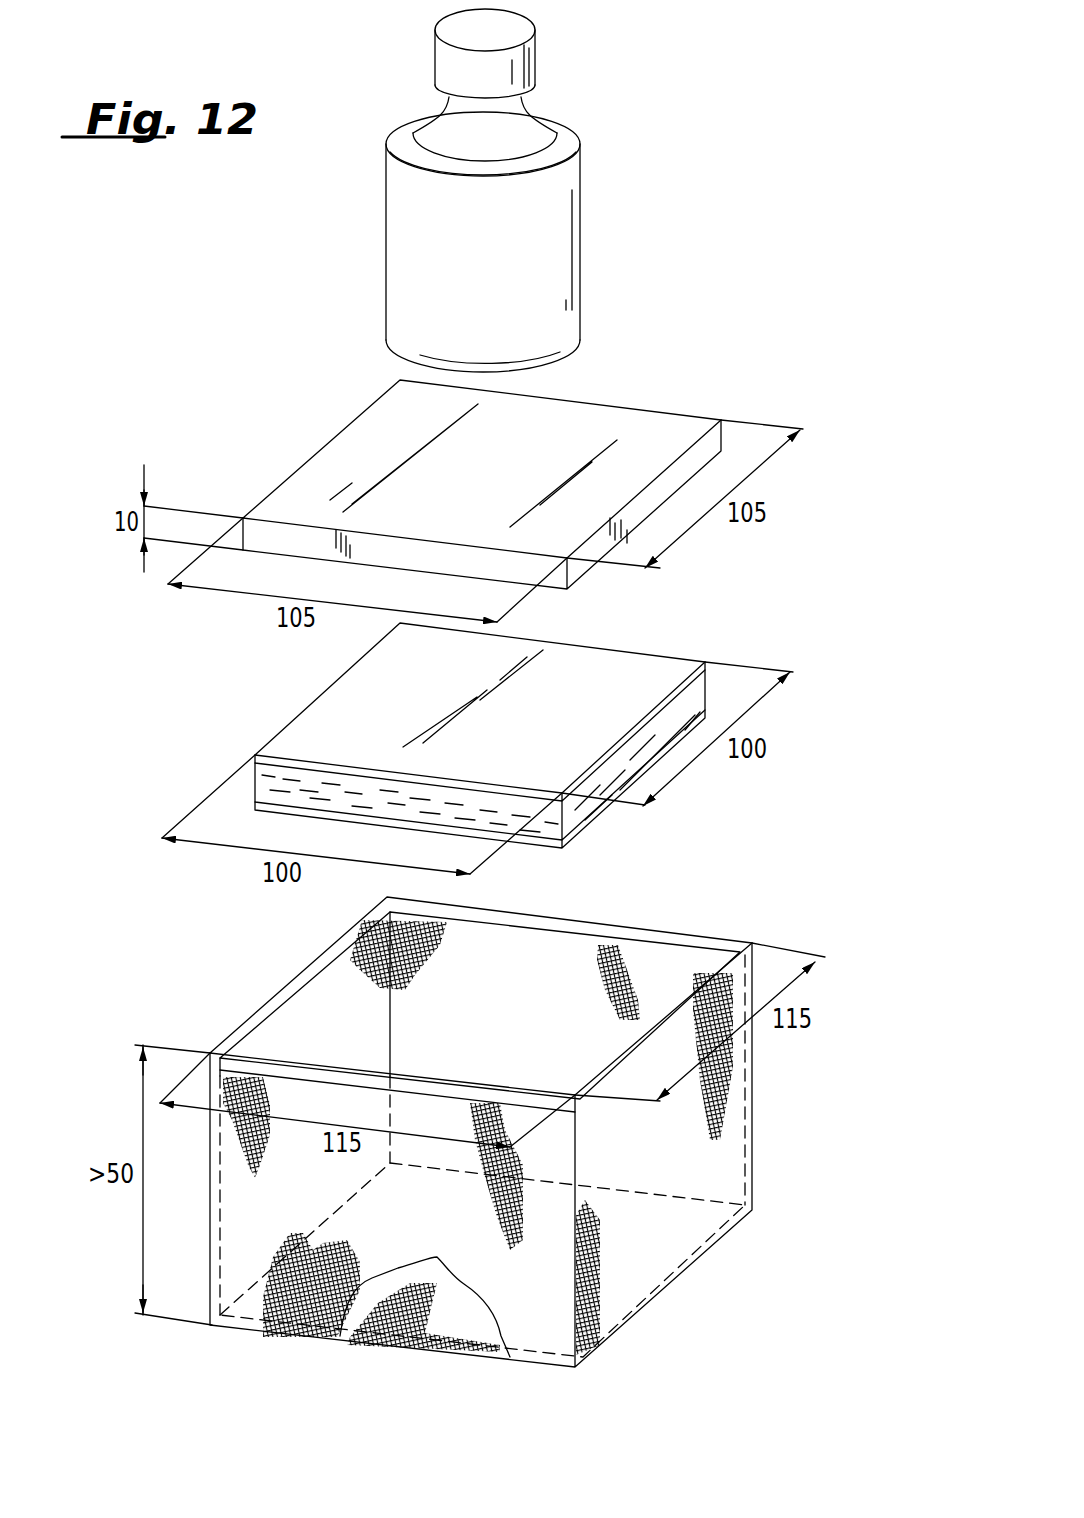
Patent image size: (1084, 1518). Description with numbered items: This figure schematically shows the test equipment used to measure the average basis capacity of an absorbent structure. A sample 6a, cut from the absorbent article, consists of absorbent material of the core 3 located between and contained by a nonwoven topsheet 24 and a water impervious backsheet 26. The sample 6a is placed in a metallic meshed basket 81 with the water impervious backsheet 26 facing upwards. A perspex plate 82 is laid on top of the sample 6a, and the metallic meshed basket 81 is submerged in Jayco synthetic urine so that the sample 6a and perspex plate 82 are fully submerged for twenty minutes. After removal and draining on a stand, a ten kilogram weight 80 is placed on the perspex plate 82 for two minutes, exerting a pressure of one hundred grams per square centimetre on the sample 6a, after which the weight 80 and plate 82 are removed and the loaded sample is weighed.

The weight 80 is at (561, 234).
The perspex plate 82 is at (638, 418).
The backsheet 26 is at (617, 670).
The sample 6a is at (546, 727).
The absorbent structure 3 is at (698, 697).
The topsheet 24 is at (592, 826).
The metallic meshed basket 81 is at (735, 1099).